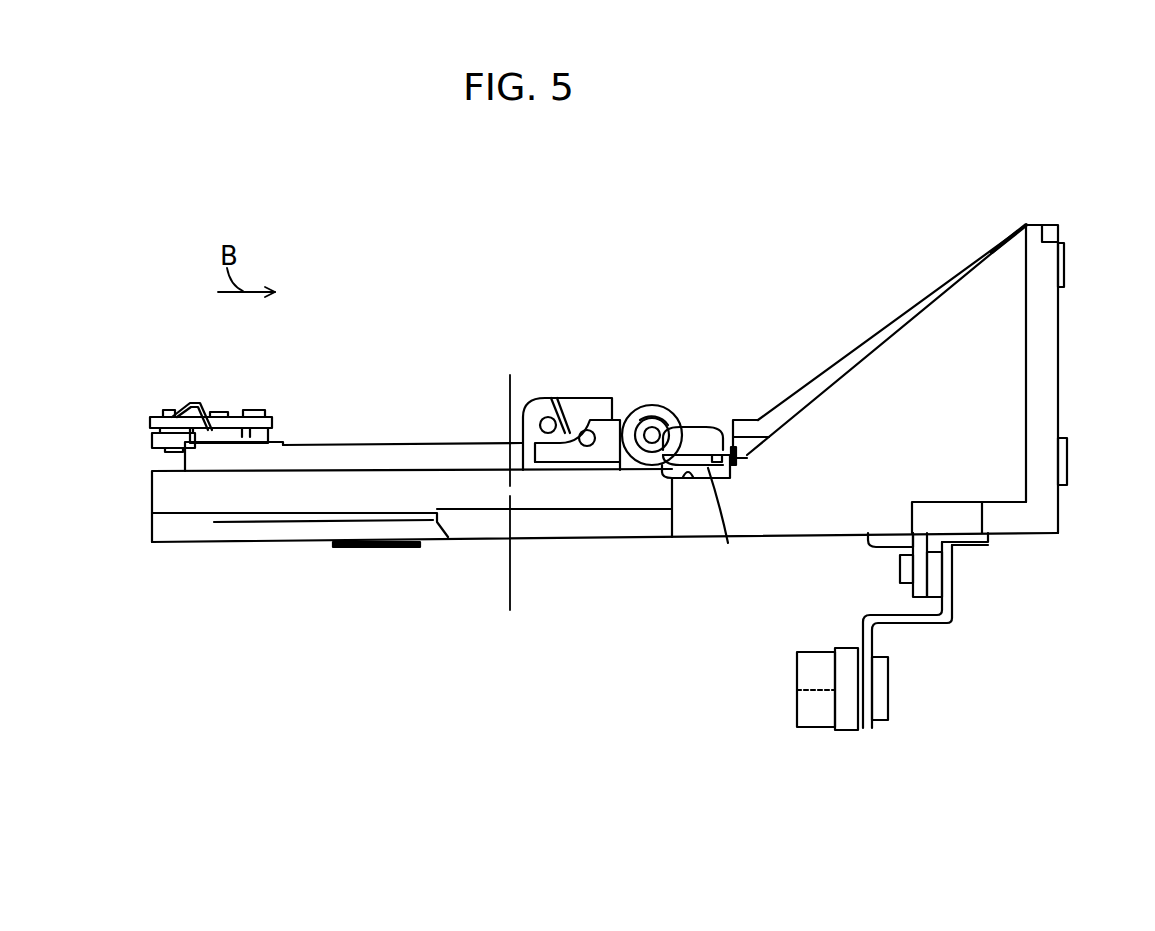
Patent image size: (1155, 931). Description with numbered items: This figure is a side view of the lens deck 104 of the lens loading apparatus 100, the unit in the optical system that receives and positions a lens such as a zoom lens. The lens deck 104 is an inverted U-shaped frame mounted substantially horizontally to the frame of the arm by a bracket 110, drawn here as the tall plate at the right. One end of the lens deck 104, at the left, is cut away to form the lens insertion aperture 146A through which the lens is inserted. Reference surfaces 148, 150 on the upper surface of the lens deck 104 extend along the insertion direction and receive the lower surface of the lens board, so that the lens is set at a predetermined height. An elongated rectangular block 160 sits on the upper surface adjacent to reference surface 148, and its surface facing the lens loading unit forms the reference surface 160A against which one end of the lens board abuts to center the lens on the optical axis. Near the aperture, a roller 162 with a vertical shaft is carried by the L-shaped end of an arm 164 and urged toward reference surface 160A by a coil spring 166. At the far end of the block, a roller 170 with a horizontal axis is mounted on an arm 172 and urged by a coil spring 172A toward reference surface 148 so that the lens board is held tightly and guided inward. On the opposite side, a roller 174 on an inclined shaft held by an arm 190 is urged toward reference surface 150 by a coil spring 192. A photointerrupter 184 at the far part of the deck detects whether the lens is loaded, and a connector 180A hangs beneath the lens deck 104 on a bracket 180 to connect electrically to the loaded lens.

The lens loading apparatus 100 is at (1013, 174).
The lens deck 104 is at (622, 515).
The bracket 110 is at (1057, 352).
The lens insertion aperture 146A is at (220, 514).
The reference surface 148 is at (291, 496).
The reference surface 150 is at (484, 490).
The block 160 is at (152, 493).
The reference surface 160A is at (353, 490).
The roller 162 is at (148, 437).
The arm 164 is at (240, 408).
The coil spring 166 is at (203, 408).
The roller 170 is at (655, 407).
The arm 172 is at (625, 417).
The coil spring 172A is at (575, 405).
The roller 174 is at (720, 400).
The bracket 180 is at (977, 580).
The connector 180A is at (845, 733).
The photointerrupter 184 is at (743, 418).
The arm 190 is at (705, 470).
The coil spring 192 is at (750, 455).